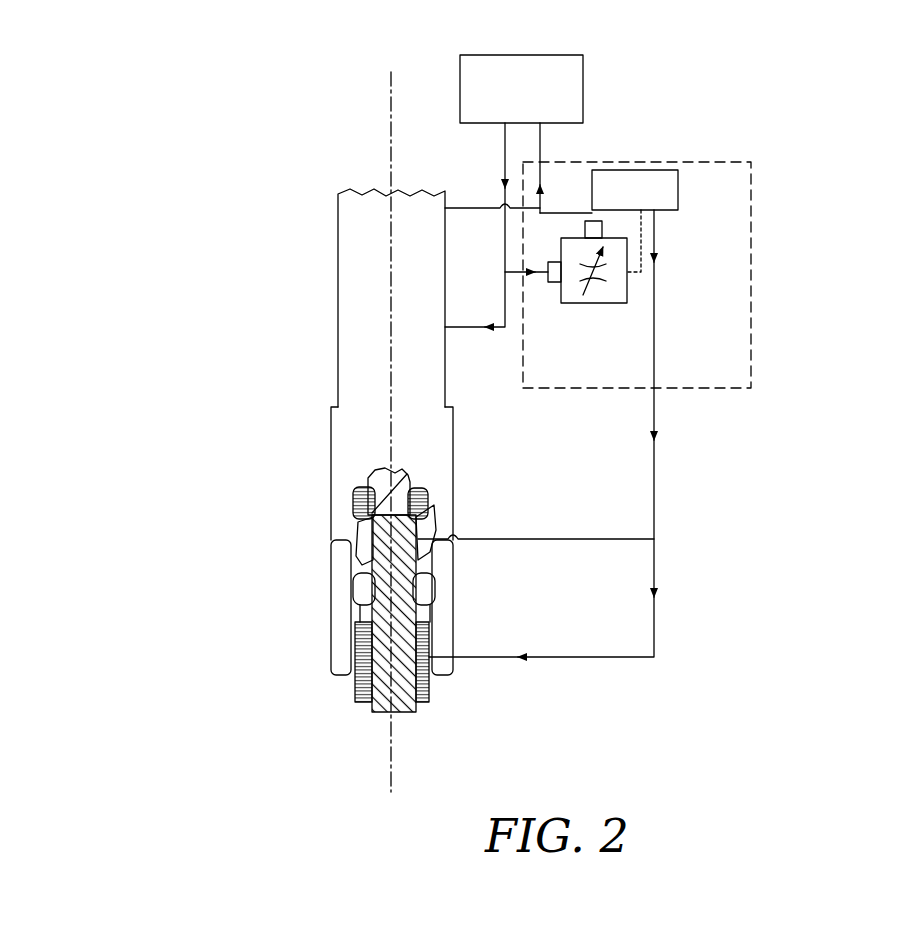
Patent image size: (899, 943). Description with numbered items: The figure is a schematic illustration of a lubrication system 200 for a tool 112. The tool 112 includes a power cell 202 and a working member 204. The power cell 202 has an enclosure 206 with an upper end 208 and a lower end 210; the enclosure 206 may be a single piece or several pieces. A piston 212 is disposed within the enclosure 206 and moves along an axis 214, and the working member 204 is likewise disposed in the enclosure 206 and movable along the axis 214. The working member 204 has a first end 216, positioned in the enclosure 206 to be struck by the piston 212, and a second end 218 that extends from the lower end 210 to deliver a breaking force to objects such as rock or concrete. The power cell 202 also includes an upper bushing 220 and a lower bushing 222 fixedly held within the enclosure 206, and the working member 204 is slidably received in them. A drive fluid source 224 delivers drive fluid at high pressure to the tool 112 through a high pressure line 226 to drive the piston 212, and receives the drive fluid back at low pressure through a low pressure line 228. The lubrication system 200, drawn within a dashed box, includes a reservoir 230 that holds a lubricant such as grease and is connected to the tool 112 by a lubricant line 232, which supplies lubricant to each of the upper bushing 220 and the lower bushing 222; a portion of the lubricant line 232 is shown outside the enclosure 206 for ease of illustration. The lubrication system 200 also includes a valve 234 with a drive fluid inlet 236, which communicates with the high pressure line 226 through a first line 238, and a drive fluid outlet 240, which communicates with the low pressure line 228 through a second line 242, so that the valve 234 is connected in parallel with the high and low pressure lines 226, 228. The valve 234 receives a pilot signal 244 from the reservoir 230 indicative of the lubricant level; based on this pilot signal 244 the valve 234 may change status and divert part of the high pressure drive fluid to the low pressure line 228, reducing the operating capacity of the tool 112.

The tool 112 is at (300, 270).
The lubrication system 200 is at (762, 183).
The power cell 202 is at (367, 340).
The working member 204 is at (353, 635).
The enclosure 206 is at (332, 432).
The upper end 208 is at (278, 180).
The lower end 210 is at (308, 670).
The piston 212 is at (380, 477).
The axis 214 is at (391, 90).
The first end 216 is at (349, 528).
The second end 218 is at (363, 722).
The upper bushing 220 is at (358, 552).
The lower bushing 222 is at (353, 683).
The drive fluid source 224 is at (521, 89).
The high pressure line 226 is at (505, 165).
The low pressure line 228 is at (540, 147).
The reservoir 230 is at (635, 190).
The lubricant line 232 is at (655, 507).
The valve 234 is at (600, 303).
The drive fluid inlet 236 is at (554, 283).
The first line 238 is at (527, 278).
The drive fluid outlet 240 is at (602, 228).
The second line 242 is at (555, 213).
The pilot signal 244 is at (643, 252).